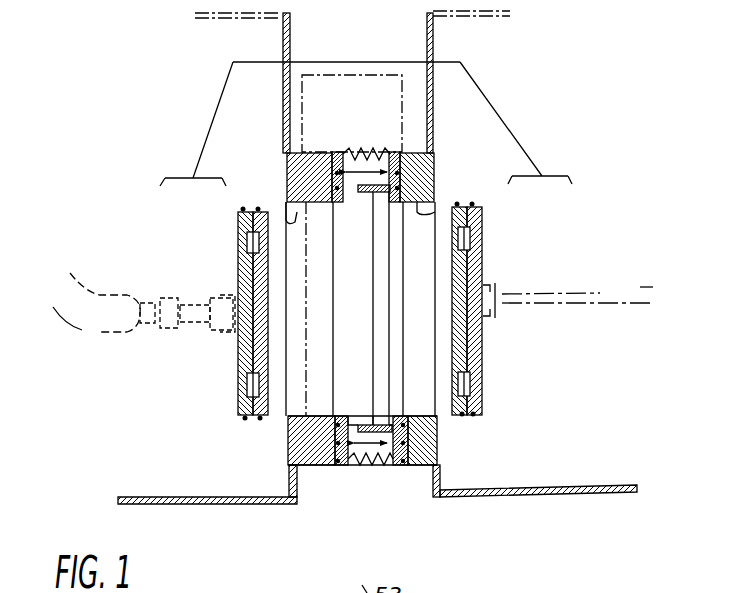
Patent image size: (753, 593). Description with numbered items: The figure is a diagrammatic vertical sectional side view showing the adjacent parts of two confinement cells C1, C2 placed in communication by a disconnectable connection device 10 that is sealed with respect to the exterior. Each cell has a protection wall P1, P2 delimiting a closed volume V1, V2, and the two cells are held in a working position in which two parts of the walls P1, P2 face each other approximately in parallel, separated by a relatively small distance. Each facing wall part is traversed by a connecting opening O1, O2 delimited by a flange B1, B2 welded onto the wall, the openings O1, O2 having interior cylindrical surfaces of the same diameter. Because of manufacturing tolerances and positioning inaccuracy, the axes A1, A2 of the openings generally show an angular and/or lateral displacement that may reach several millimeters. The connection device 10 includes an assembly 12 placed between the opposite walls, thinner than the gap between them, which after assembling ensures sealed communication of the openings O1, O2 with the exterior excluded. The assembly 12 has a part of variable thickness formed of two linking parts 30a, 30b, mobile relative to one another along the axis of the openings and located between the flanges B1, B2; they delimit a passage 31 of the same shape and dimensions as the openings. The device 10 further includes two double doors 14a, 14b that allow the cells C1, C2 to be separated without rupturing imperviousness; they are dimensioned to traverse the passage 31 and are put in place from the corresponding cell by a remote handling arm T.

The connection device 10 is at (355, 83).
The assembly 12 is at (376, 86).
The double door 14a is at (484, 244).
The double door 14b is at (236, 242).
The passage 31 is at (356, 400).
The linking part 30a is at (401, 466).
The linking part 30b is at (347, 466).
The connecting opening O1 is at (434, 213).
The connecting opening O2 is at (286, 218).
The flange B1 is at (424, 450).
The flange B2 is at (298, 448).
The protection wall P1 is at (471, 495).
The protection wall P2 is at (279, 498).
The confinement cell C1 is at (518, 500).
The confinement cell C2 is at (200, 510).
The closed volume V1 is at (567, 122).
The closed volume V2 is at (160, 129).
The axis A1 is at (600, 293).
The axis A2 is at (631, 307).
The remote handling arm T is at (93, 327).